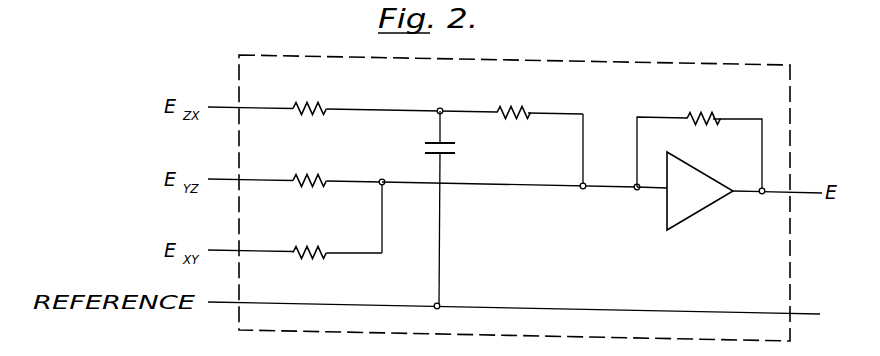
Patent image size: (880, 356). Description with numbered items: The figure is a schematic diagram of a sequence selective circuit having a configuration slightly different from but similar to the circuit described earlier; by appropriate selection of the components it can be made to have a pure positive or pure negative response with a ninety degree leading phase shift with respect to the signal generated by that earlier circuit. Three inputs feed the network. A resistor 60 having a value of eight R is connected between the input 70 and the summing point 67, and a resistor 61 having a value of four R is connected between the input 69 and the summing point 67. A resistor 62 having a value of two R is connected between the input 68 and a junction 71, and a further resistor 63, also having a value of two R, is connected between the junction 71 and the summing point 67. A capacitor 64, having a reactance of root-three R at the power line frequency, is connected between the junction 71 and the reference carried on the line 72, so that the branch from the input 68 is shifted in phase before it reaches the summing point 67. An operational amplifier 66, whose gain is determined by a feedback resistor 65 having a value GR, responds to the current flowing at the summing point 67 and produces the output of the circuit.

The resistor 60 is at (326, 257).
The resistor 61 is at (326, 185).
The resistor 62 is at (326, 113).
The resistor 63 is at (527, 117).
The capacitor 64 is at (424, 148).
The resistor 65 is at (712, 122).
The operational amplifier 66 is at (706, 208).
The summing point 67 is at (607, 193).
The input 68 is at (262, 105).
The input 69 is at (260, 178).
The input 70 is at (261, 252).
The junction 71 is at (437, 108).
The reference line 72 is at (283, 301).